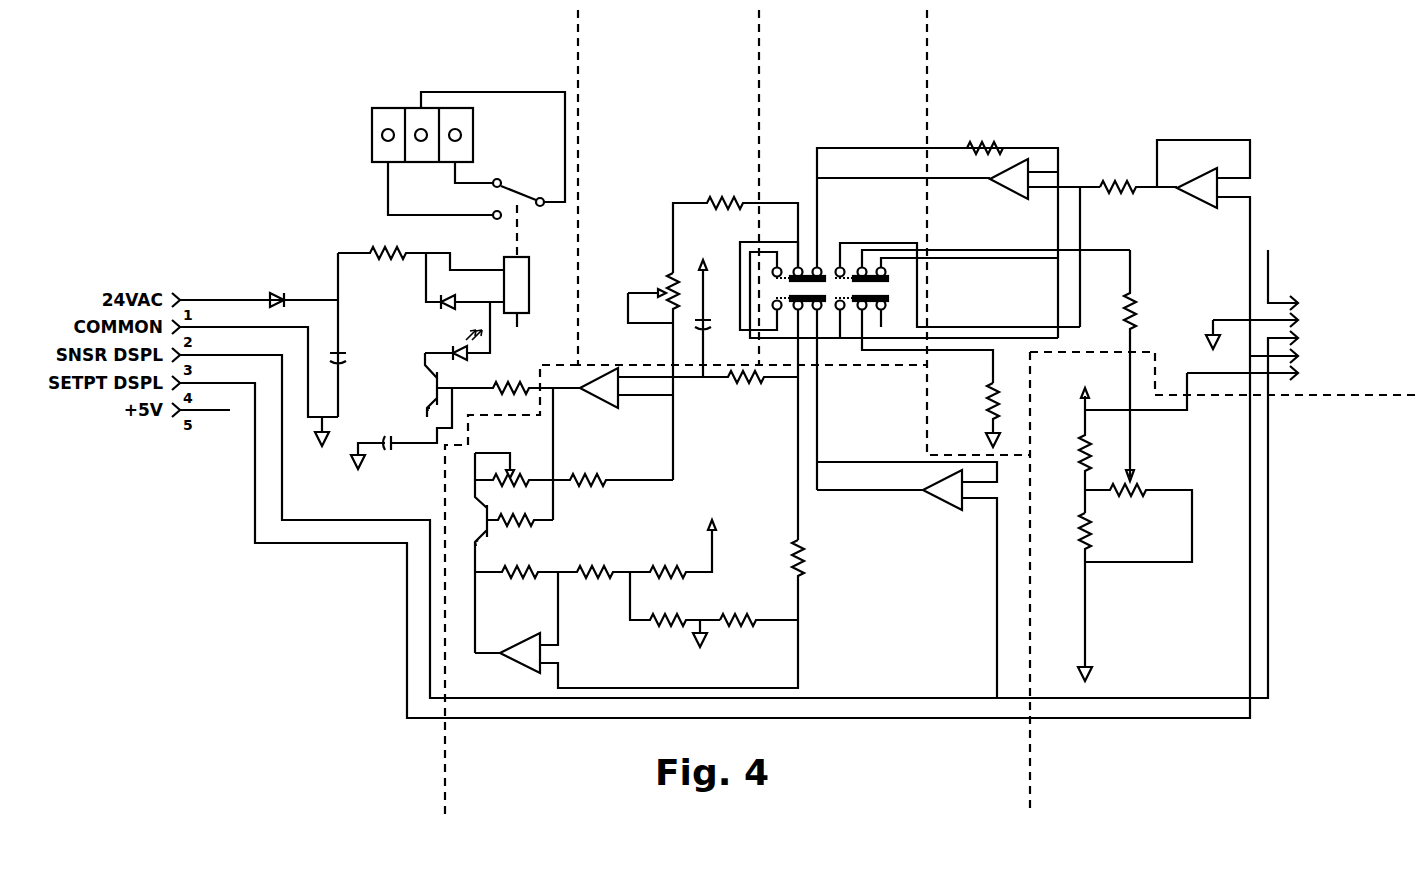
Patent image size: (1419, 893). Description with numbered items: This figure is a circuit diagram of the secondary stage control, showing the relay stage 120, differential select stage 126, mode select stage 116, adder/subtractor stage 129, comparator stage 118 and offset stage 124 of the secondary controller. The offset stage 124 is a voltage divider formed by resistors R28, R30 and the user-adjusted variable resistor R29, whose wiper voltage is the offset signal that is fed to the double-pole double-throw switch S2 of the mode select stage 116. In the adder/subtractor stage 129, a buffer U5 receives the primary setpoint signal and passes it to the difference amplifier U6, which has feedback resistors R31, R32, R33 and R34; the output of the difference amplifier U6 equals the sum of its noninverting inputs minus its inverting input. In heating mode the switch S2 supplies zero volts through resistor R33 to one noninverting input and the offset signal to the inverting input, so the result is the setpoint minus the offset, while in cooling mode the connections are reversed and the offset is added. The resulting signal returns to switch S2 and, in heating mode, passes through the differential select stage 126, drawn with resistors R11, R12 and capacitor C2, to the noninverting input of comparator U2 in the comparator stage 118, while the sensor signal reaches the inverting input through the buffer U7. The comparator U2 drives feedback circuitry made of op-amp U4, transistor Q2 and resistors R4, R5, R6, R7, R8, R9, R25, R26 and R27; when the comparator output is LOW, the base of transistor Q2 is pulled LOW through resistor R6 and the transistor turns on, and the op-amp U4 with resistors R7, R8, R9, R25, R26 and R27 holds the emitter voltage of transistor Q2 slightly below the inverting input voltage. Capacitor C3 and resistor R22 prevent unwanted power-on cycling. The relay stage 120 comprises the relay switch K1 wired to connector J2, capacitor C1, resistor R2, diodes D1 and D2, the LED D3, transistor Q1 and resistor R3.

The relay stage 120 is at (406, 280).
The differential select stage 126 is at (686, 415).
The mode select stage 116 is at (935, 275).
The adder/subtractor stage 129 is at (1193, 233).
The comparator stage 118 is at (726, 590).
The offset stage 124 is at (1123, 581).
The diode D1 is at (277, 290).
The diode D2 is at (465, 281).
The LED D3 is at (457, 331).
The capacitor C1 is at (349, 335).
The capacitor C2 is at (713, 307).
The capacitor C3 is at (401, 428).
The resistor R2 is at (421, 248).
The resistor R3 is at (508, 376).
The resistor R4 is at (613, 492).
The resistor R5 is at (514, 454).
The resistor R6 is at (520, 533).
The resistor R7 is at (516, 584).
The resistor R8 is at (594, 562).
The resistor R9 is at (681, 540).
The potentiometer R11 is at (638, 373).
The resistor R12 is at (735, 224).
The resistor R22 is at (708, 387).
The resistor R25 is at (675, 609).
The resistor R26 is at (759, 609).
The resistor R27 is at (672, 614).
The voltage divider resistor R28 is at (1106, 597).
The variable resistor R29 is at (1149, 486).
The voltage divider resistor R30 is at (1073, 440).
The feedback resistor R31 is at (1138, 176).
The feedback resistor R32 is at (1151, 330).
The feedback resistor R33 is at (971, 415).
The feedback resistor R34 is at (988, 137).
The connector J2 is at (453, 153).
The switch K1 is at (518, 242).
The transistor Q1 is at (417, 385).
The transistor Q2 is at (469, 553).
The switch S2 is at (935, 344).
The comparator U2 is at (620, 403).
The op-amp U4 is at (510, 623).
The buffer U5 is at (1203, 174).
The difference amplifier U6 is at (1044, 243).
The buffer U7 is at (907, 580).